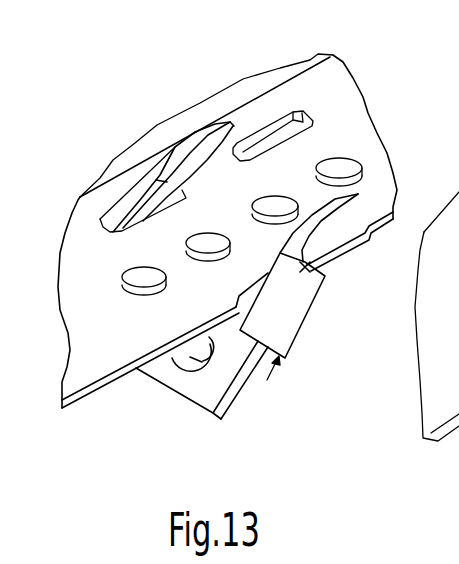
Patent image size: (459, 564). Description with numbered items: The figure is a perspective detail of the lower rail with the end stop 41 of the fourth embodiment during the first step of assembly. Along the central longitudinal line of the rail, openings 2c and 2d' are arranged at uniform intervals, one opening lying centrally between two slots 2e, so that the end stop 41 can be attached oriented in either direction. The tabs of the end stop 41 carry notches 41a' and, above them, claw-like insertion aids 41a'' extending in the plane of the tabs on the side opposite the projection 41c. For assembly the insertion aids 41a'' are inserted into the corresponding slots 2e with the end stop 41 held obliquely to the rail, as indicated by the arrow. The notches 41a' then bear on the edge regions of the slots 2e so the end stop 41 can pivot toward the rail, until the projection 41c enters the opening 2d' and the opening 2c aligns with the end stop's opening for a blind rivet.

The slot 2e is at (114, 215).
The opening 2c is at (210, 241).
The opening 2d' is at (139, 366).
The insertion aid 41a'' is at (173, 122).
The notch 41a' is at (301, 276).
The projection 41c is at (190, 357).
The end stop 41 is at (444, 547).